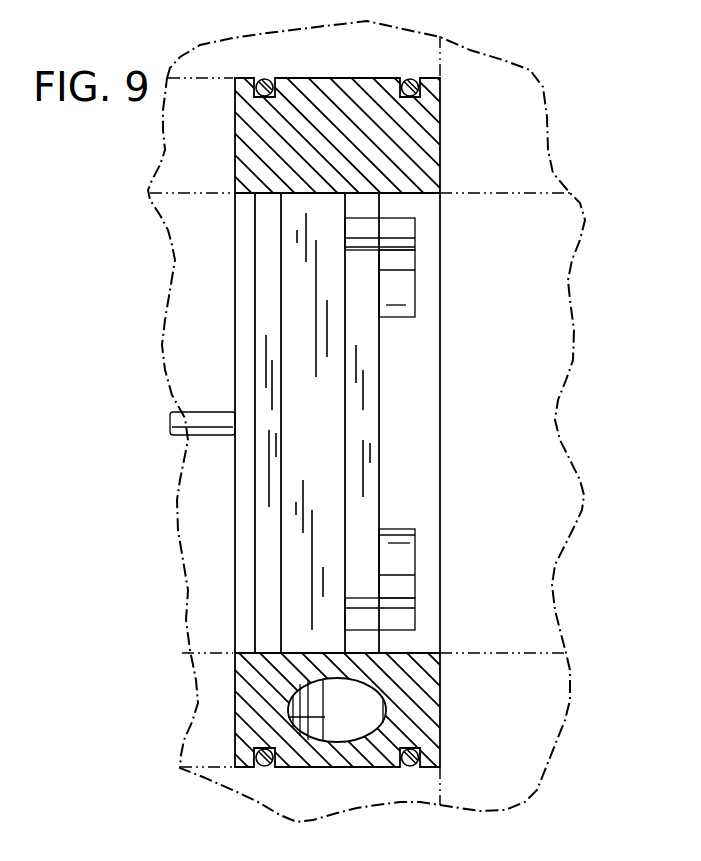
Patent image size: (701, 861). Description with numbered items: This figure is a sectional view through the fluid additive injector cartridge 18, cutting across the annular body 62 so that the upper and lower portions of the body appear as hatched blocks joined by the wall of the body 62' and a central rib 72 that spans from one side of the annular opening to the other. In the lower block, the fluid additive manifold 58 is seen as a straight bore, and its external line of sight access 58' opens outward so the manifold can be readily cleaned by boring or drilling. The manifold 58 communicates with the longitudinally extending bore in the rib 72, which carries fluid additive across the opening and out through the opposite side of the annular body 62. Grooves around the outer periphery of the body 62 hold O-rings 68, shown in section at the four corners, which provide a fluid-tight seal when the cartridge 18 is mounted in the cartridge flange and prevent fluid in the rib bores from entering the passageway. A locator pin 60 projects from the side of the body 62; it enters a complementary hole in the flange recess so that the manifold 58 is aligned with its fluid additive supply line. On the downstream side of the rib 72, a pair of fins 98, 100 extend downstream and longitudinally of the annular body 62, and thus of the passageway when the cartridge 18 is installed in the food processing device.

The fluid additive injector cartridge 18 is at (470, 362).
The fluid additive manifold 58 is at (338, 710).
The external line of sight access 58' is at (257, 710).
The locator pin 60 is at (170, 424).
The annular body 62 is at (344, 135).
The housing wall 62' is at (386, 423).
The O-ring 68 is at (263, 78).
The rib 72 is at (335, 414).
The fin 98 is at (395, 228).
The fin 100 is at (415, 282).